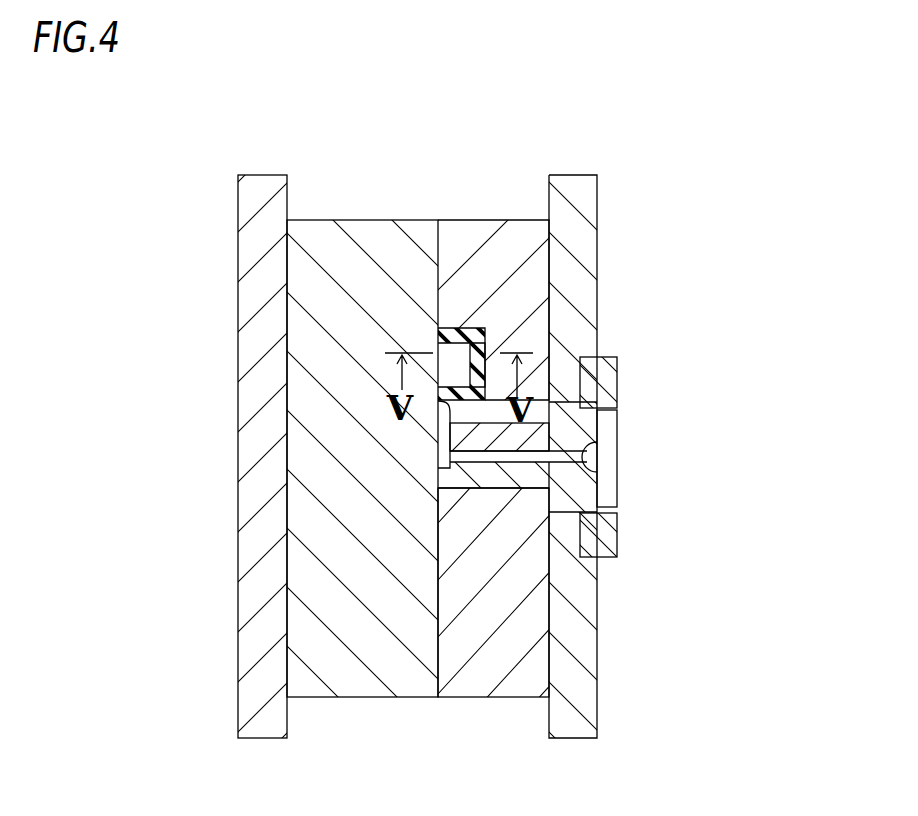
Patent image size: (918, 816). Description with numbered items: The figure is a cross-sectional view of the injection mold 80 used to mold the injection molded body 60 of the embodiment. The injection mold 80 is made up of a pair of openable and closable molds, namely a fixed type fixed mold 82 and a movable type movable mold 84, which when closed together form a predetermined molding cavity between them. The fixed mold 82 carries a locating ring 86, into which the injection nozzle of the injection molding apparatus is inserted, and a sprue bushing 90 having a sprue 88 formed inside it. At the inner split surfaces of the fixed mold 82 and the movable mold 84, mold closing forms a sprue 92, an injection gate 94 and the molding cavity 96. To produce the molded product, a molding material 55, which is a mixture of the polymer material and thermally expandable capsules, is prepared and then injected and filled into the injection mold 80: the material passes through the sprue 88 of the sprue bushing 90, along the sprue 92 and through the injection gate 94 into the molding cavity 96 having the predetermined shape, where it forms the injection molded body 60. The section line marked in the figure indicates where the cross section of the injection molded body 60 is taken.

The injection mold 80 is at (713, 166).
The movable mold 84 is at (358, 228).
The fixed mold 82 is at (476, 228).
The injection molded body 60 is at (482, 328).
The molding cavity 96 is at (486, 343).
The injection gate 94 is at (443, 433).
The sprue 92 is at (445, 403).
The sprue bushing 90 is at (582, 492).
The locating ring 86 is at (605, 542).
The molding material 55 is at (500, 458).
The sprue 88 is at (487, 497).